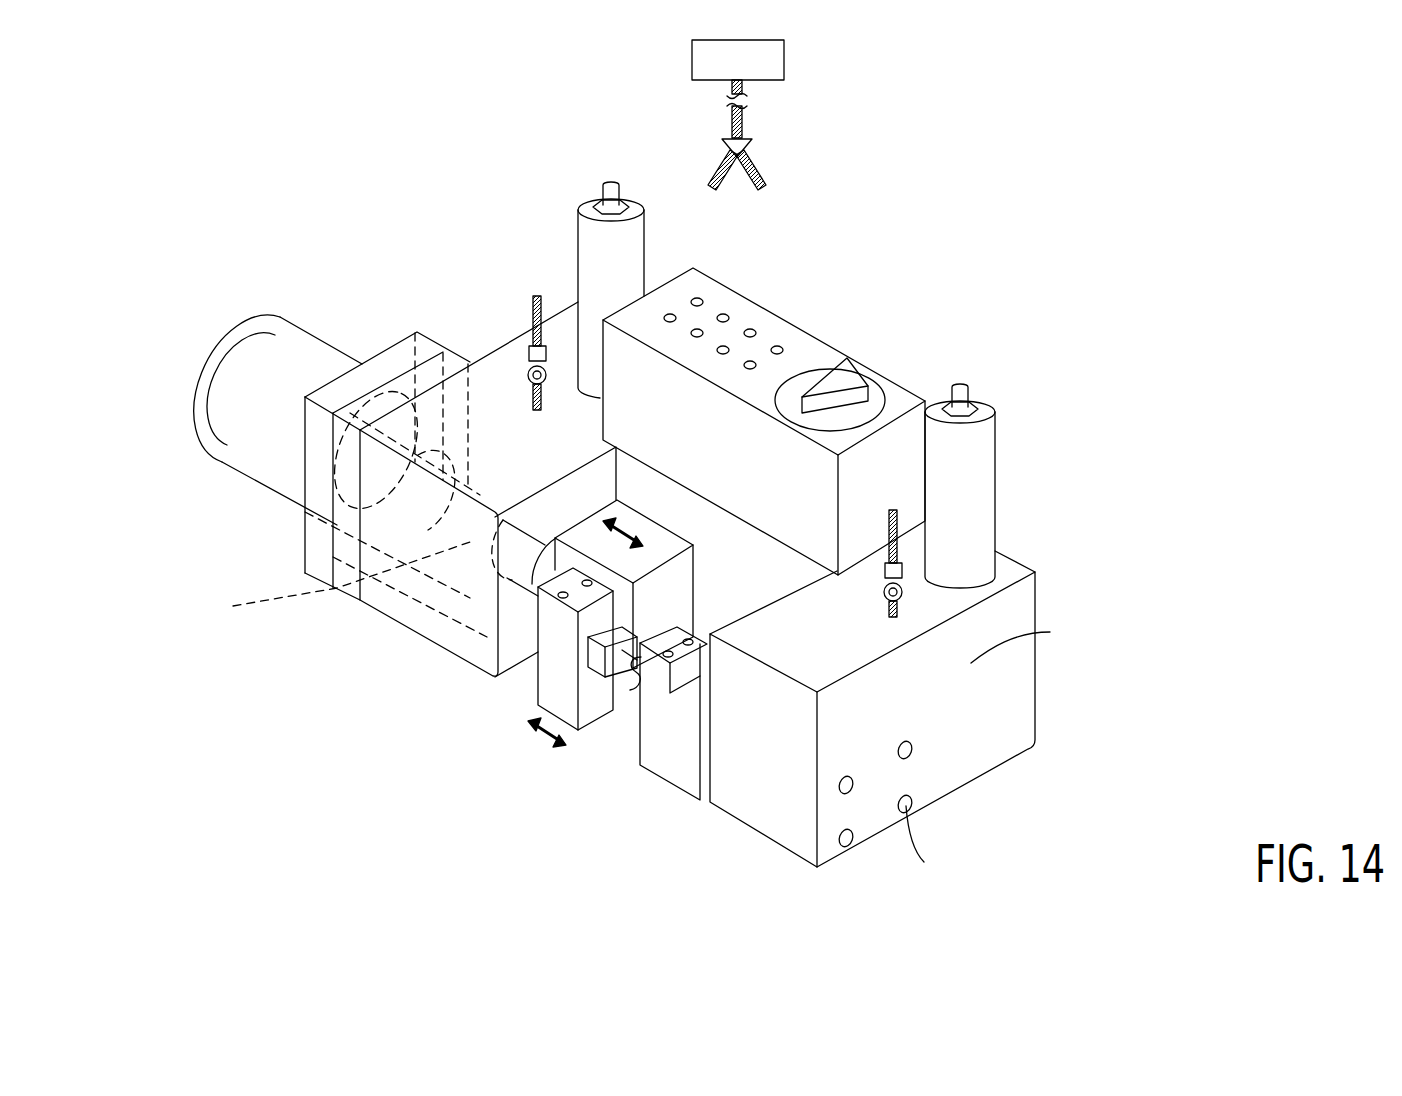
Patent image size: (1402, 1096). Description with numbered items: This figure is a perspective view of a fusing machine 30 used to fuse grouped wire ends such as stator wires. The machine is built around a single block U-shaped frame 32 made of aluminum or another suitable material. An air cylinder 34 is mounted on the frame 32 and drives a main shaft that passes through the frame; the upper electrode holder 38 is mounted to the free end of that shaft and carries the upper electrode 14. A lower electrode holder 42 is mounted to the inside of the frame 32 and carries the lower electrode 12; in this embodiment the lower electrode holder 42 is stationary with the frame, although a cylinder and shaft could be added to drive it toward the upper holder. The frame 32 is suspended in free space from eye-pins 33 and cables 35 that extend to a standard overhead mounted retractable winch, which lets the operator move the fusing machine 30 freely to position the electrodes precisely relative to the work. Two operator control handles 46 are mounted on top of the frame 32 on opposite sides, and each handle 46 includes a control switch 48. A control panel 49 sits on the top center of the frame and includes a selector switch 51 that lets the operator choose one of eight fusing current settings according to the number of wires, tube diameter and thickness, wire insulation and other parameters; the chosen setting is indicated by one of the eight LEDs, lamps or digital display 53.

The lower electrode 12 is at (638, 665).
The upper electrode 14 is at (598, 652).
The fusing machine 30 is at (396, 278).
The single block U-shaped frame 32 is at (474, 350).
The eye-pins 33 is at (534, 398).
The air cylinder 34 is at (258, 440).
The cables 35 is at (535, 298).
The upper electrode holder 38 is at (547, 644).
The lower electrode holder 42 is at (665, 752).
The operator control handles 46 is at (627, 257).
The control switch 48 is at (605, 185).
The control panel 49 is at (797, 338).
The selector switch 51 is at (873, 400).
The LEDs, lamps or digital display 53 is at (752, 328).